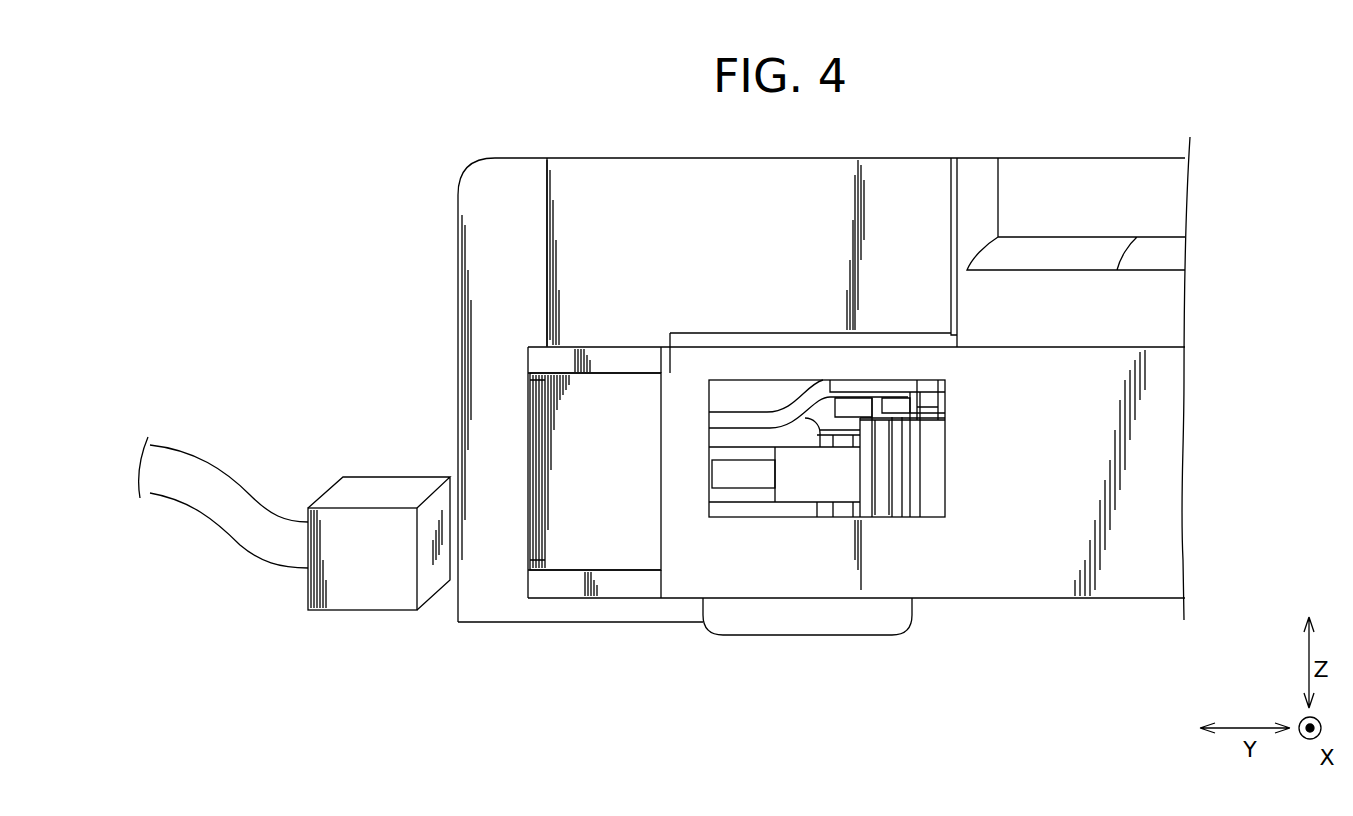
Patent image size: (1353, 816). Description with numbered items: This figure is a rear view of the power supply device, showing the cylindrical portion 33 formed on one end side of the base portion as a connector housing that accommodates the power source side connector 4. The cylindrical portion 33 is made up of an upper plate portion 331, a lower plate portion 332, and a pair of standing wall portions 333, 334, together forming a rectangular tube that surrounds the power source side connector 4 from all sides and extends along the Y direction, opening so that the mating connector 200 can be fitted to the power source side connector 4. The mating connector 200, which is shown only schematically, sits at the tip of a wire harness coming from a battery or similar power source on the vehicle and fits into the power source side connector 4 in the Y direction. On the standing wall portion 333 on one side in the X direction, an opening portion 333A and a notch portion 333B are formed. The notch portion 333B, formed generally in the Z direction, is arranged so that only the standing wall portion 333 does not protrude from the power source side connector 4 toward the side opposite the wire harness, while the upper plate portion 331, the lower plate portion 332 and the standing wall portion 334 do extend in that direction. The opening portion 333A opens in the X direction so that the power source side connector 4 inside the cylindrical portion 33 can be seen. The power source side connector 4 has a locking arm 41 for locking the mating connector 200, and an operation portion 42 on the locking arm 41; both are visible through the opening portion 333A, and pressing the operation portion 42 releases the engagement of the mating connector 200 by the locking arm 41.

The power source side connector 4 is at (845, 468).
The locking arm 41 is at (740, 475).
The operation portion 42 is at (885, 450).
The cylindrical portion 33 is at (618, 598).
The upper plate portion 331 is at (588, 345).
The lower plate portion 332 is at (560, 578).
The standing wall portion 333 is at (702, 448).
The opening portion 333A is at (747, 402).
The notch portion 333B is at (568, 433).
The standing wall portion 334 is at (578, 404).
The mating connector 200 is at (378, 492).